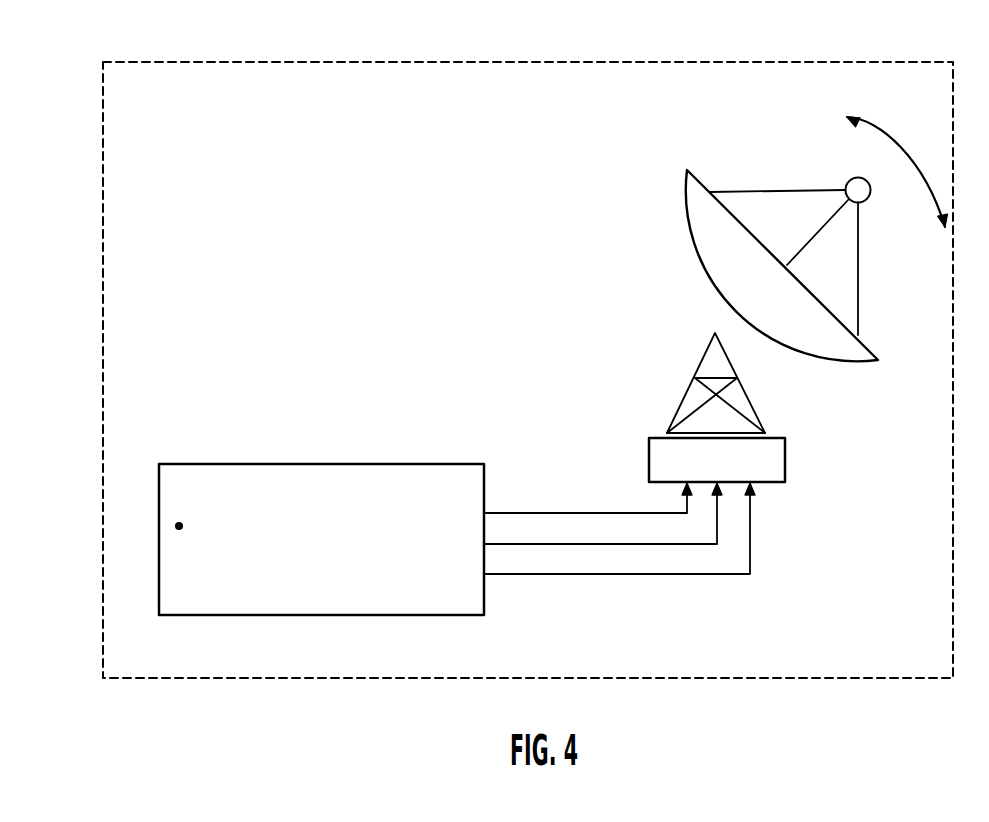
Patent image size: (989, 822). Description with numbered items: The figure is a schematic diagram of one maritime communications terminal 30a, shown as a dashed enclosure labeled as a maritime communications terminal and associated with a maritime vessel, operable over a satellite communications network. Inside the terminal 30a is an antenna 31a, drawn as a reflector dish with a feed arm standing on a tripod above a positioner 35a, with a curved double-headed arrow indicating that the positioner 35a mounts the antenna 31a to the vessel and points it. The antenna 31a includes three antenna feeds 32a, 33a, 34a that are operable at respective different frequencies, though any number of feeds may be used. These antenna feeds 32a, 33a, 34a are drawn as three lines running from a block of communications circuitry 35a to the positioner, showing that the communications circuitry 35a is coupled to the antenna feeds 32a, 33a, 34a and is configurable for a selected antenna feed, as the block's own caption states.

The maritime communications terminal 30a is at (218, 62).
The antenna 31a is at (840, 357).
The antenna feed 32a is at (580, 513).
The antenna feed 33a is at (695, 545).
The antenna feed 34a is at (635, 574).
The communications circuitry 35a is at (785, 462).